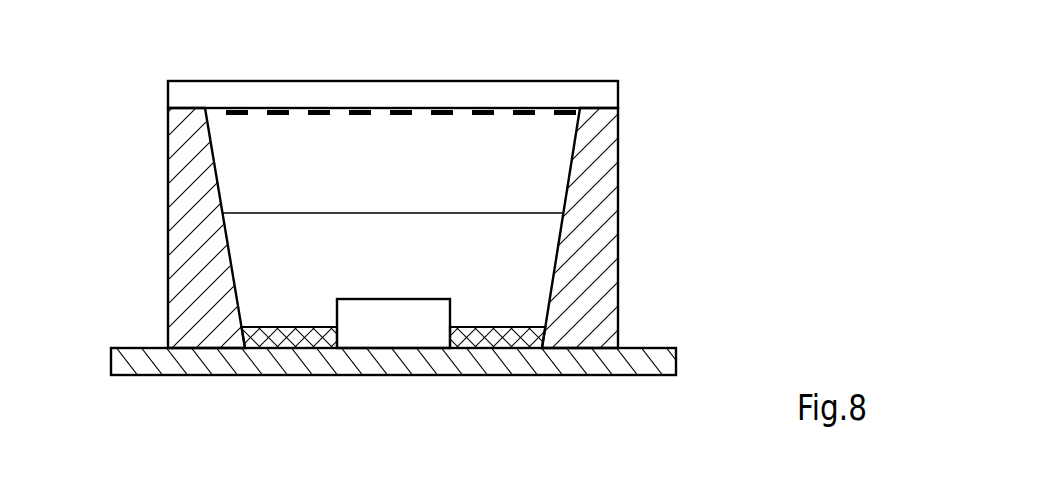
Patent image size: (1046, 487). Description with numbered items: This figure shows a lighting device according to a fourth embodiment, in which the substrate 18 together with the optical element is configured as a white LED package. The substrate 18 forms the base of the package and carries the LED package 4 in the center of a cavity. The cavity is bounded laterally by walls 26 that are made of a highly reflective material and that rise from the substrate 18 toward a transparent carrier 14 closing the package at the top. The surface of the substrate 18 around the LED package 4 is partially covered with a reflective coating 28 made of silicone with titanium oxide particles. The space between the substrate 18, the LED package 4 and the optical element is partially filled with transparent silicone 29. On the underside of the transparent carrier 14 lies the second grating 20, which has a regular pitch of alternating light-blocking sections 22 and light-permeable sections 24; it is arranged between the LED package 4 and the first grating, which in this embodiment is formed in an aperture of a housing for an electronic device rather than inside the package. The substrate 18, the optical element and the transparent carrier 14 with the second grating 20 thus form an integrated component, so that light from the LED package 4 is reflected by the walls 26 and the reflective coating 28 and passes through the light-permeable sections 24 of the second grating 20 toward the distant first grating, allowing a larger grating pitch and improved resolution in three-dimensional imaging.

The LED 4 is at (408, 333).
The transparent carrier 14 is at (604, 96).
The substrate 18 is at (650, 362).
The second grating 20 is at (354, 130).
The light-blocking sections 22 is at (442, 115).
The light-permeable sections 24 is at (463, 115).
The walls 26 is at (190, 278).
The reflective coating 28 is at (495, 335).
The transparent silicone 29 is at (295, 283).